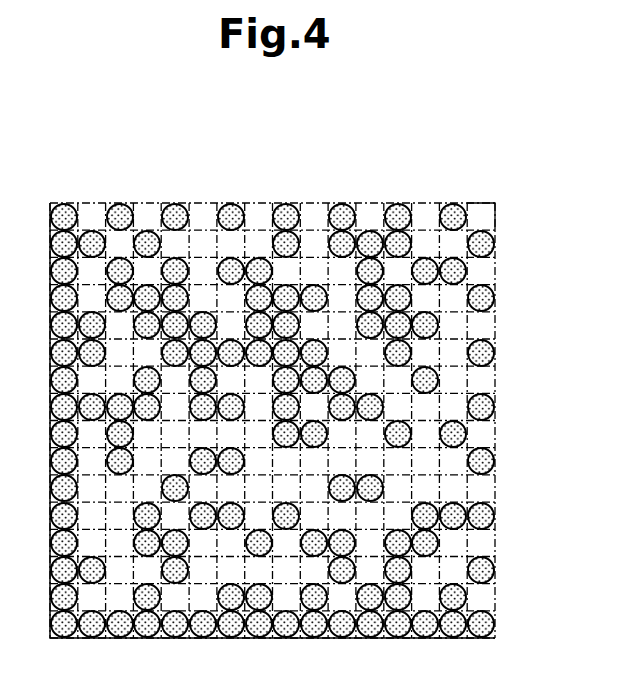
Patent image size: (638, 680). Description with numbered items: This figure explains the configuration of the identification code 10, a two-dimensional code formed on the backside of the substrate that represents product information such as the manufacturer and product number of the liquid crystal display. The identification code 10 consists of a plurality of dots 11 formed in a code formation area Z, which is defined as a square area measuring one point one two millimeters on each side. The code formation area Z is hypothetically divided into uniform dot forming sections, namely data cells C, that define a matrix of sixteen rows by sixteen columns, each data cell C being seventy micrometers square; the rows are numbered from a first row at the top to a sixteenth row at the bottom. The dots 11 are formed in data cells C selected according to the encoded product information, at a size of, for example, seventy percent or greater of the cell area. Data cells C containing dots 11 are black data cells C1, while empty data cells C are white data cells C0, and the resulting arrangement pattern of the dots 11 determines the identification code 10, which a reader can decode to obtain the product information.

The identification code 10 is at (318, 361).
The dot 11 is at (493, 297).
The data cell C is at (327, 360).
The white data cell C0 is at (258, 203).
The black data cell C1 is at (397, 203).
The code formation area Z is at (474, 200).